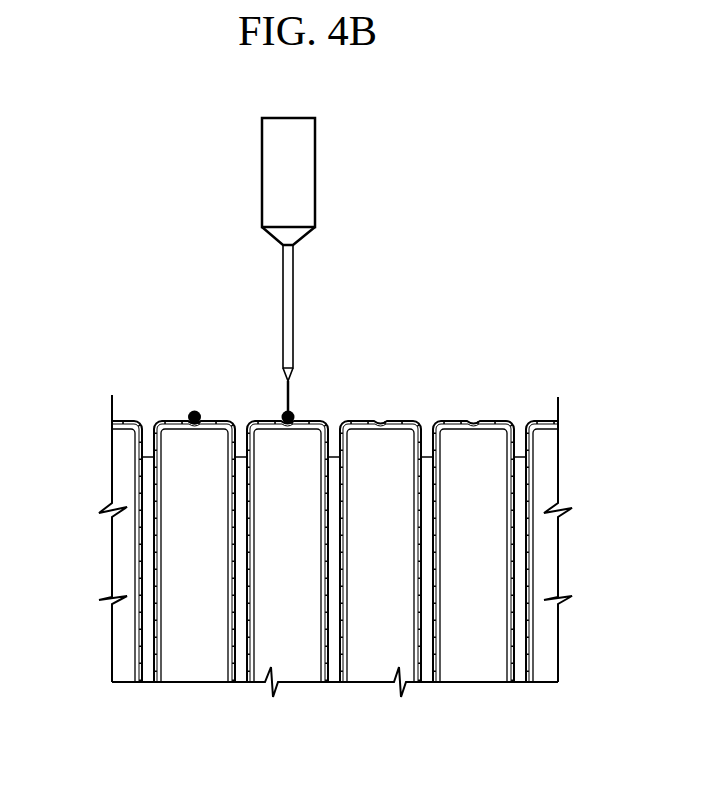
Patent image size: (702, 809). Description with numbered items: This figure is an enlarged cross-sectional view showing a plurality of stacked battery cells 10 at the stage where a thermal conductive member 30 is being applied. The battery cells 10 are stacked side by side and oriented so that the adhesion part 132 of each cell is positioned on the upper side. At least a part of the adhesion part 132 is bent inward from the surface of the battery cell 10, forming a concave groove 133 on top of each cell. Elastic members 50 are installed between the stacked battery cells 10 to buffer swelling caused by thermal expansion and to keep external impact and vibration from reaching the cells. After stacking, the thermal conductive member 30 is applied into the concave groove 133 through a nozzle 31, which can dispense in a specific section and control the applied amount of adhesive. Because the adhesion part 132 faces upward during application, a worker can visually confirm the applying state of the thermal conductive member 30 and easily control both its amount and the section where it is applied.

The battery cell 10 is at (182, 645).
The thermal conductive member 30 is at (197, 411).
The nozzle 31 is at (315, 171).
The elastic member 50 is at (334, 677).
The adhesion part 132 is at (170, 421).
The concave groove 133 is at (193, 426).